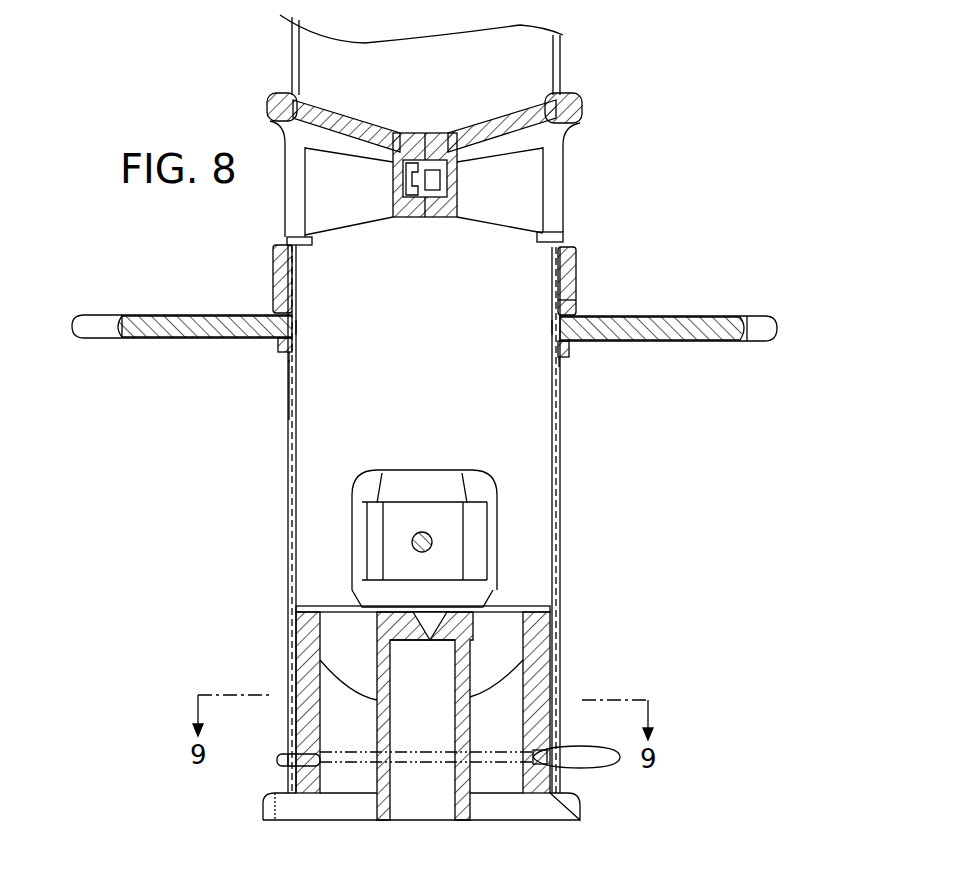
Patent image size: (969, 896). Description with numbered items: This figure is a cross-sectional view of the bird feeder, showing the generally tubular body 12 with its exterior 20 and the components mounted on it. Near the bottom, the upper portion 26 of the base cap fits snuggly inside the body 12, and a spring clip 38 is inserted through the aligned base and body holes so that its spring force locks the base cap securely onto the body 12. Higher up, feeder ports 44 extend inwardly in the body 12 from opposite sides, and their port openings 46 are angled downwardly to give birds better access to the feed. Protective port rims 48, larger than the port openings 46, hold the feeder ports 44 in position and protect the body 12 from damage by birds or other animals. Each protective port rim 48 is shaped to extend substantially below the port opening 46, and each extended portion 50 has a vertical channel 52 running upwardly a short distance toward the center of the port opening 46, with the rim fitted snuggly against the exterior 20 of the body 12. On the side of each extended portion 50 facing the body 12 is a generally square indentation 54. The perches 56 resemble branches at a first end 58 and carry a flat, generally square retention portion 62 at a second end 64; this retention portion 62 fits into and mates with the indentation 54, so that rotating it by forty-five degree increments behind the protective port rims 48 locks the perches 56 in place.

The body 12 is at (478, 95).
The exterior 20 is at (288, 395).
The upper portion 26 is at (556, 660).
The spring clip 38 is at (607, 765).
The feeder ports 44 is at (424, 191).
The port openings 46 is at (526, 212).
The protective port rims 48 is at (272, 272).
The extended portion 50 is at (575, 300).
The vertical channel 52 is at (278, 349).
The indentation 54 is at (275, 308).
The perches 56 is at (70, 333).
The first end 58 is at (772, 343).
The retention portion 62 is at (278, 352).
The second end 64 is at (299, 327).